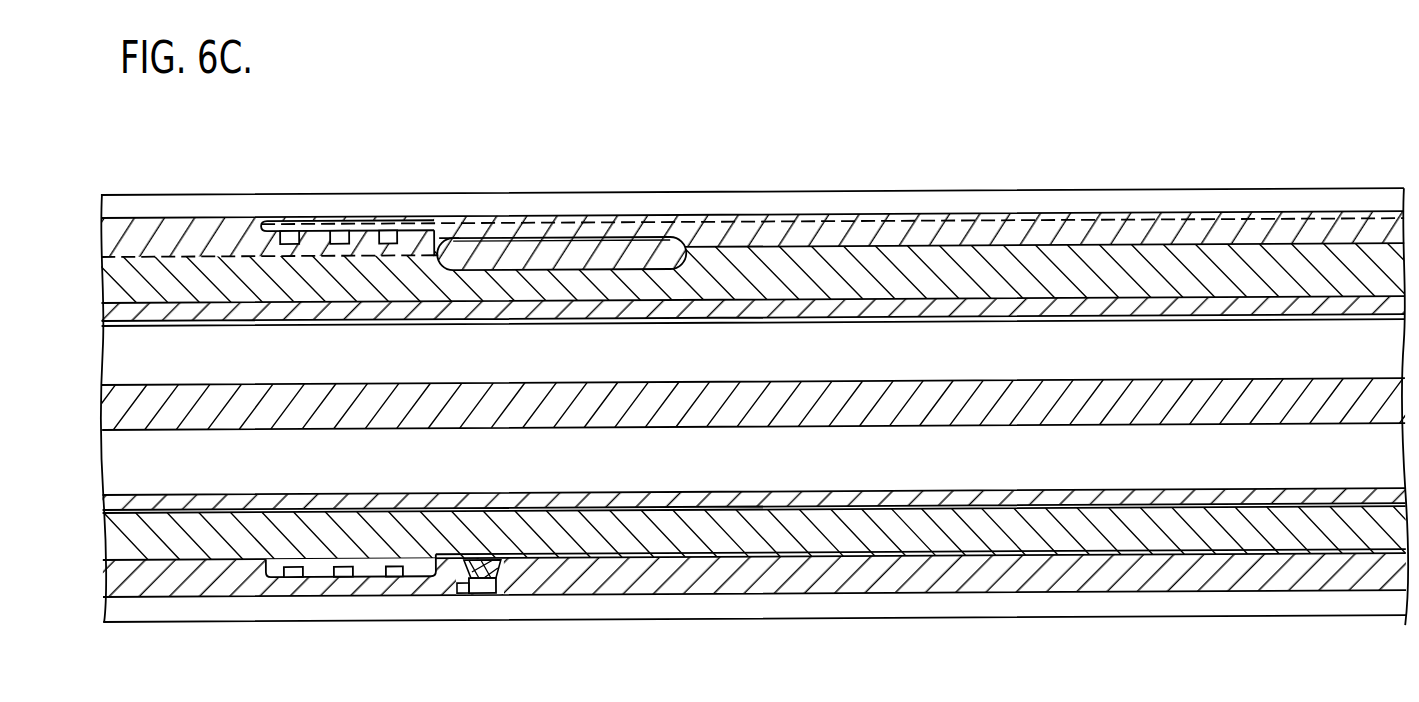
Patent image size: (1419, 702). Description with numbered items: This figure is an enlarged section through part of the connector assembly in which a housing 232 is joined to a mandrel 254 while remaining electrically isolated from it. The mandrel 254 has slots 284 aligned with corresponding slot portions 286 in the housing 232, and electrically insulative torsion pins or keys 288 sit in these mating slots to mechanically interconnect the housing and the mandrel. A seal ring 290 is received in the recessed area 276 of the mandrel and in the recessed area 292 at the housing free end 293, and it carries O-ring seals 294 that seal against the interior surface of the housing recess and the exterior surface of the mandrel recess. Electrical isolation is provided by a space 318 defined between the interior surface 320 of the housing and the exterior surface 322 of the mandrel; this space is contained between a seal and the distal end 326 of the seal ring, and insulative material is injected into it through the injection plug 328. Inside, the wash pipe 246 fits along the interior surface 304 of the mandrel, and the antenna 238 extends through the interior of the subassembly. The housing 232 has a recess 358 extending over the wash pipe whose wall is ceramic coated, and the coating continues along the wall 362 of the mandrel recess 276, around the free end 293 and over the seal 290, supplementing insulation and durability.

The seal ring 290 is at (127, 237).
The recessed area of the mandrel 276 is at (156, 266).
The recess of the housing 358 is at (232, 203).
The housing free end 293 is at (300, 225).
The recessed area of the housing 292 is at (372, 236).
The distal end of the seal 326 is at (440, 248).
The slot portions of the housing 286 is at (482, 250).
The torsion pins or keys 288 is at (563, 234).
The slots of the mandrel 284 is at (624, 288).
The mandrel 254 is at (793, 265).
The interior surface of the mandrel 304 is at (880, 306).
The wash pipe 246 is at (1000, 288).
The exterior surface of the mandrel 322 is at (1070, 262).
The housing 232 is at (1252, 226).
The interior surface of the housing 320 is at (1340, 240).
The antenna 238 is at (703, 432).
The wall of the mandrel recess 362 is at (201, 552).
The O-ring seals 294 is at (333, 584).
The injection plug 328 is at (497, 602).
The space 318 is at (1128, 556).